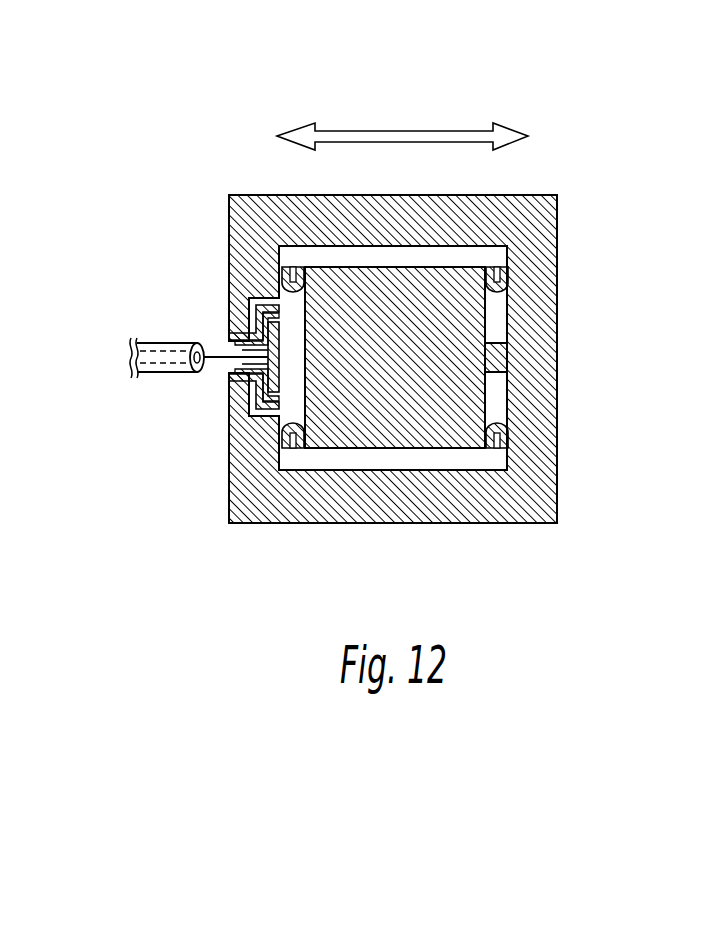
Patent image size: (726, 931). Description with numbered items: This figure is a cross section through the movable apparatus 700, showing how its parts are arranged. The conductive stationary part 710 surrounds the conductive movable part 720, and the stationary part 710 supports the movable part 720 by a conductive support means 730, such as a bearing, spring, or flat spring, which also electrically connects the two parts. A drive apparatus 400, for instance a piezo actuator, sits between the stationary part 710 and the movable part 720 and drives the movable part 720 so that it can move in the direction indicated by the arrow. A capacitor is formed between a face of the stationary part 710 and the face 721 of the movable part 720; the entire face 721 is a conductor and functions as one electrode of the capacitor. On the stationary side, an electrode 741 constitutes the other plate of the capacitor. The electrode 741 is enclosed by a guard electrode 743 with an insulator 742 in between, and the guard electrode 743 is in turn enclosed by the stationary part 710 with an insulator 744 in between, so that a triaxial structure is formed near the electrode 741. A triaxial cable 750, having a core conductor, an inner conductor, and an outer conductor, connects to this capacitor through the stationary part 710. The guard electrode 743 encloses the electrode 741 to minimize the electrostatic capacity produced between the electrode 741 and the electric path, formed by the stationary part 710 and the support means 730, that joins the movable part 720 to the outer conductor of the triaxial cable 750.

The movable apparatus 700 is at (83, 96).
The stationary part 710 is at (543, 258).
The movable part 720 is at (418, 436).
The face of movable part 721 is at (303, 408).
The support means 730 is at (292, 270).
The drive apparatus 400 is at (500, 343).
The electrode 741 is at (283, 405).
The insulator 742 is at (248, 352).
The guard electrode 743 is at (248, 342).
The insulator 744 is at (248, 337).
The triaxial cable 750 is at (170, 343).